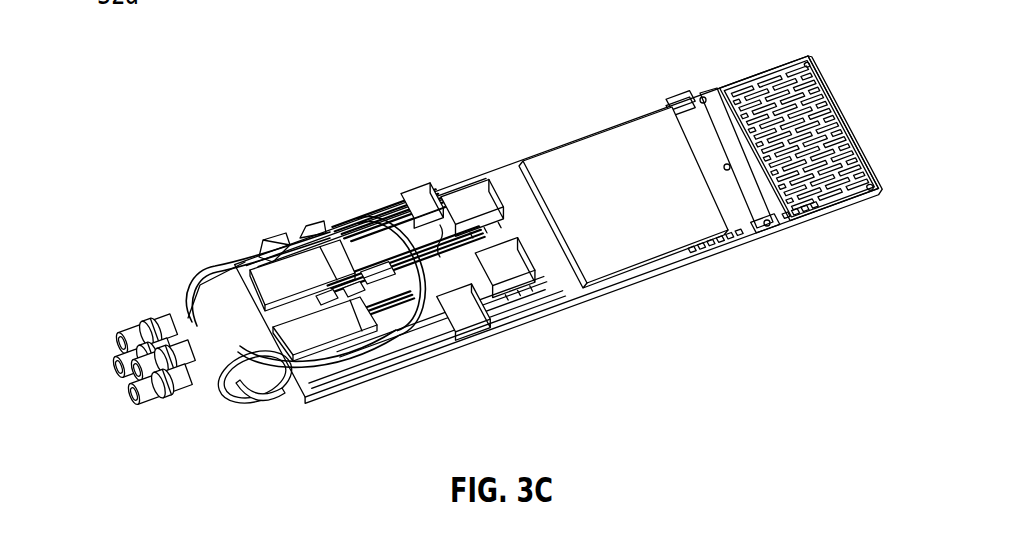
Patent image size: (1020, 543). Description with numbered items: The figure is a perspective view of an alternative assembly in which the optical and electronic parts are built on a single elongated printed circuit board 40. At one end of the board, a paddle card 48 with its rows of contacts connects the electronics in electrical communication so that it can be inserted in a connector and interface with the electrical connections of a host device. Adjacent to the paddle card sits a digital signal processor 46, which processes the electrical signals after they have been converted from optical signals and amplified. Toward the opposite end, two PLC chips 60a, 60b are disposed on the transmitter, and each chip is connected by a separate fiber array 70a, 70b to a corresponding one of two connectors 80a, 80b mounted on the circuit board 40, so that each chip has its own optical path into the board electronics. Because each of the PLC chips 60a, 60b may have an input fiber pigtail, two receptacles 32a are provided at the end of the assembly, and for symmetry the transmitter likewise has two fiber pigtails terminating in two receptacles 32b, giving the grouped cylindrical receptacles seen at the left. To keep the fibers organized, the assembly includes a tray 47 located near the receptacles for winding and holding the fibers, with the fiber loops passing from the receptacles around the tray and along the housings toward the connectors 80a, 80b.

The receptacles 32a is at (155, 427).
The receptacles 32b is at (130, 322).
The printed circuit board 40 is at (580, 305).
The digital signal processor 46 is at (652, 232).
The tray 47 is at (262, 403).
The paddle card 48 is at (797, 60).
The PLC chip 60a is at (293, 250).
The PLC chip 60b is at (310, 394).
The fiber array 70a is at (422, 208).
The fiber array 70b is at (477, 330).
The connector 80a is at (460, 190).
The connector 80b is at (513, 320).